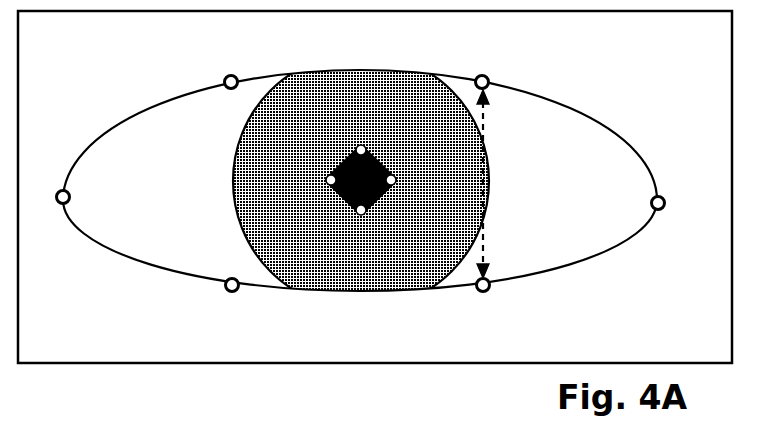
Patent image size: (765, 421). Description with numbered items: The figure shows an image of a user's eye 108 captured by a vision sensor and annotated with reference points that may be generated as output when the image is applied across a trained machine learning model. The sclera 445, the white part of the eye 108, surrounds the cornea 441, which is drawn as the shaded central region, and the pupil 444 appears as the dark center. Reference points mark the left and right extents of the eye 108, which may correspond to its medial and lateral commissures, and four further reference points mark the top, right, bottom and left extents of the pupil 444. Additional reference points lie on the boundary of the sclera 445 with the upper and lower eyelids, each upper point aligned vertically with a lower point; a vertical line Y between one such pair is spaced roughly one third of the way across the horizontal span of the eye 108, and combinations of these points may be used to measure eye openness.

The eye 108 is at (652, 107).
The sclera 445 is at (158, 240).
The cornea 441 is at (385, 268).
The pupil 444 is at (338, 157).
The vertical line Y is at (486, 116).